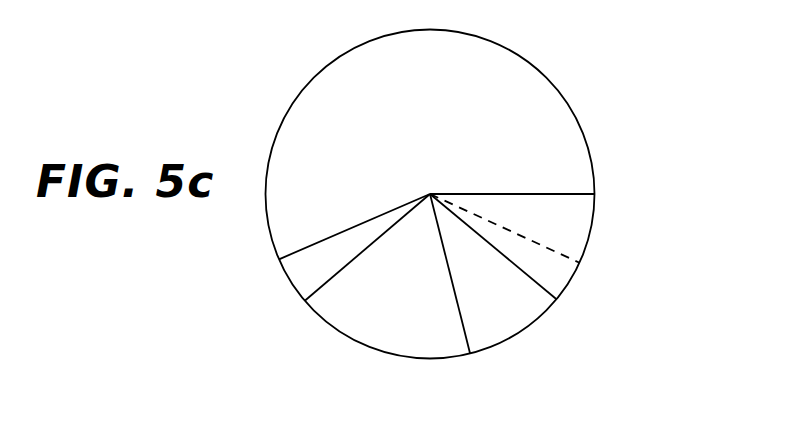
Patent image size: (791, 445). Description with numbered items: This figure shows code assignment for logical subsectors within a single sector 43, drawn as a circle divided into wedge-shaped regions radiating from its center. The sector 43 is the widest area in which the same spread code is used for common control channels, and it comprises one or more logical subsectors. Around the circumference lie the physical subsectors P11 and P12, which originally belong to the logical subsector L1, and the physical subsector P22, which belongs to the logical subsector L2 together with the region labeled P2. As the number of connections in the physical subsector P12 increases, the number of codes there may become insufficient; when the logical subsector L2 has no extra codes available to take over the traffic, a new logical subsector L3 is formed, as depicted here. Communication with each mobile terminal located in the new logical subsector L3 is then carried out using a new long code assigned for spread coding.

The sector 43 is at (300, 267).
The physical subsector P22 is at (578, 208).
The logical subsector L2 is at (578, 238).
The point P2 is at (558, 277).
The physical subsector P12 is at (527, 306).
The logical subsector L3 is at (500, 333).
The physical subsector P11 is at (367, 327).
The logical subsector L1 is at (337, 305).